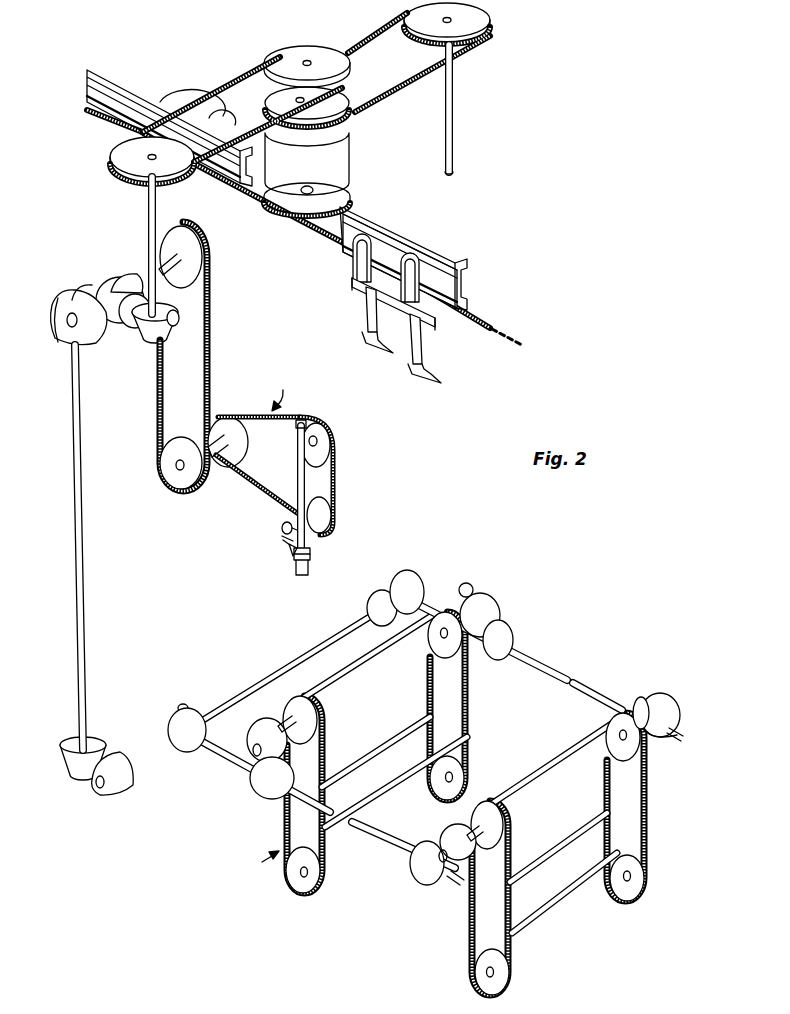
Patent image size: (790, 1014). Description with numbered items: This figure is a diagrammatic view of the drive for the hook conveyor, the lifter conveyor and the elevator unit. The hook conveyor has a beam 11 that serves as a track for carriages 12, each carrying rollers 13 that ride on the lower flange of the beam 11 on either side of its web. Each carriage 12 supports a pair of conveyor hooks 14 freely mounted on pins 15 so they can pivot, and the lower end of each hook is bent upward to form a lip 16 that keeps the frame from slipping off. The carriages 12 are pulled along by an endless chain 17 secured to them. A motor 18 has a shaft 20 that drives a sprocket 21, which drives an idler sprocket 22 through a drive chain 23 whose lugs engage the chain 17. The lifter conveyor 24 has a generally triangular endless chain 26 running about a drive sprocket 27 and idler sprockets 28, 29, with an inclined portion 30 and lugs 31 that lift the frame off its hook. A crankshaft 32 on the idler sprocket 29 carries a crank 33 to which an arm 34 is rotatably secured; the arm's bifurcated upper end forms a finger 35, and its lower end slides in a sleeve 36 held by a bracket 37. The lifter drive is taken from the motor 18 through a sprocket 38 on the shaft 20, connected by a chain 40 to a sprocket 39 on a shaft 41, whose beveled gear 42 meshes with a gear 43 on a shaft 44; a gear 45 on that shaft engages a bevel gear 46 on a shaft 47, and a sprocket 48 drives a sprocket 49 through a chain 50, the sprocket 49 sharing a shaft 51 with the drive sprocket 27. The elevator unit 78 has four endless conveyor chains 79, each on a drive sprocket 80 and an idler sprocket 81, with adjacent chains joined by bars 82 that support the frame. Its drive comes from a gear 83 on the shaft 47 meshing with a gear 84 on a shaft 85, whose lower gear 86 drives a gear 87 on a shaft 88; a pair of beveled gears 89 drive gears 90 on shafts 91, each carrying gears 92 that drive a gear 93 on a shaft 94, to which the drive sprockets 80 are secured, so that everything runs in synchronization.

The beam 11 is at (103, 72).
The carriages 12 is at (360, 272).
The rollers 13 is at (412, 240).
The conveyor hooks 14 is at (366, 318).
The pins 15 is at (362, 300).
The lip 16 is at (385, 352).
The endless chain 17 is at (320, 243).
The motor 18 is at (346, 152).
The shaft 20 is at (300, 100).
The sprocket 21 is at (346, 192).
The idler sprocket 22 is at (182, 100).
The drive chain 23 is at (230, 122).
The lifter conveyor 24 is at (282, 389).
The endless chain 26 is at (335, 466).
The drive sprocket 27 is at (222, 417).
The idler sprocket 28 is at (325, 433).
The idler sprocket 29 is at (330, 532).
The inclined portion 30 is at (290, 415).
The lugs 31 is at (240, 415).
The crankshaft 32 is at (280, 527).
The crank 33 is at (283, 537).
The arm 34 is at (297, 482).
The finger 35 is at (296, 428).
The sleeve 36 is at (309, 557).
The bracket 37 is at (291, 556).
The sprocket 38 is at (346, 63).
The sprocket 39 is at (113, 168).
The chain 40 is at (243, 75).
The shaft 41 is at (452, 117).
The beveled gear 42 is at (150, 340).
The gear 43 is at (170, 310).
The shaft 44 is at (135, 325).
The gear 45 is at (110, 282).
The bevel gear 46 is at (125, 278).
The shaft 47 is at (88, 294).
The sprocket 48 is at (196, 252).
The sprocket 49 is at (162, 470).
The chain 50 is at (206, 340).
The shaft 51 is at (216, 460).
The elevator unit 78 is at (256, 861).
The endless conveyor chains 79 is at (323, 768).
The drive sprocket 80 is at (317, 720).
The idler sprocket 81 is at (302, 892).
The bars 82 is at (383, 648).
The gear 83 is at (63, 302).
The gear 84 is at (50, 322).
The shaft 85 is at (82, 450).
The gear 86 is at (93, 748).
The gear 87 is at (118, 790).
The shaft 88 is at (256, 692).
The beveled gears 89 is at (380, 627).
The gears 90 is at (407, 580).
The shaft 91 is at (430, 607).
The gears 92 is at (265, 793).
The gear 93 is at (263, 727).
The shaft 94 is at (485, 858).